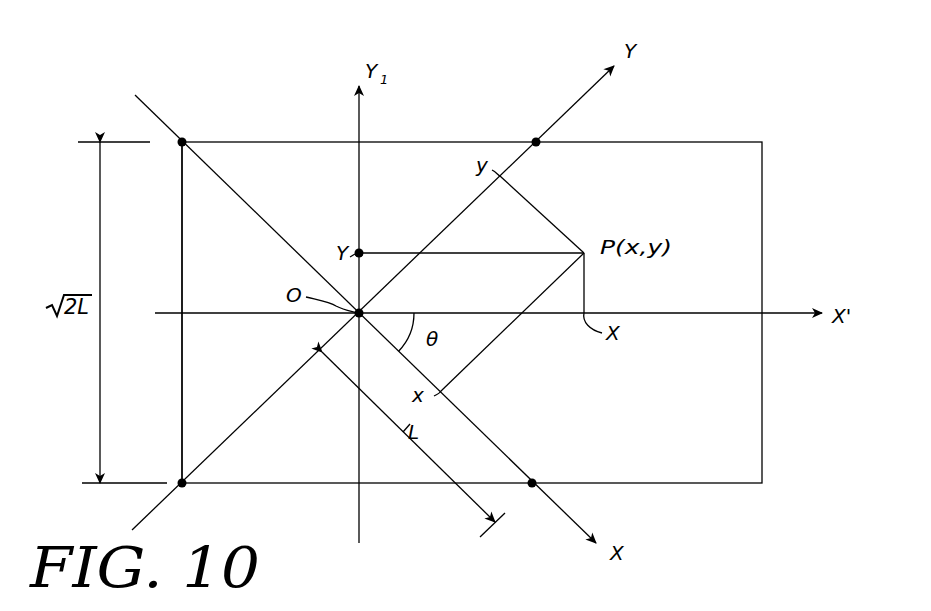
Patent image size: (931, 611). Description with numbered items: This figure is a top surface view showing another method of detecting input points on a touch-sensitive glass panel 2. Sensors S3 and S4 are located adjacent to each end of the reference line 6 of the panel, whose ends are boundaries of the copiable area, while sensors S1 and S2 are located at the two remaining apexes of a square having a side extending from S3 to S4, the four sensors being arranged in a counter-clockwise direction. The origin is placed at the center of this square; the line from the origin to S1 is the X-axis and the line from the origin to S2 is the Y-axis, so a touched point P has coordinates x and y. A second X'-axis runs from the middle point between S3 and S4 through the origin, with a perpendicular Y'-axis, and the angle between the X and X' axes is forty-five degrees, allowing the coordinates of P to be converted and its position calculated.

The sensor plate 2 is at (724, 142).
The reference line 6 is at (182, 376).
The sensor S1 is at (532, 487).
The sensor S2 is at (534, 140).
The sensor S3 is at (183, 141).
The sensor S4 is at (184, 486).